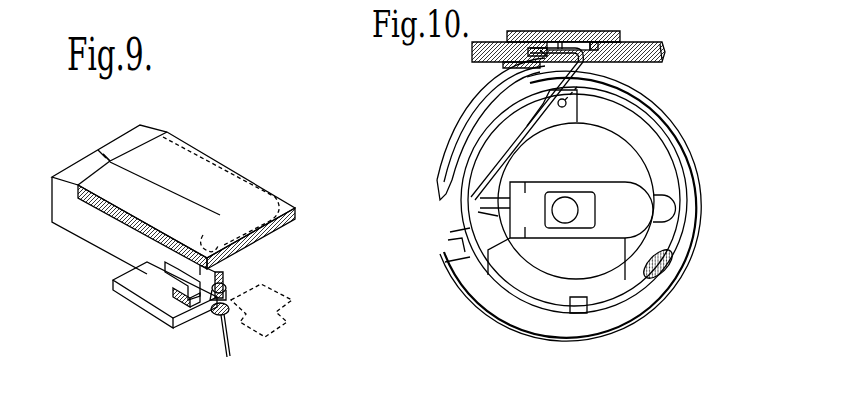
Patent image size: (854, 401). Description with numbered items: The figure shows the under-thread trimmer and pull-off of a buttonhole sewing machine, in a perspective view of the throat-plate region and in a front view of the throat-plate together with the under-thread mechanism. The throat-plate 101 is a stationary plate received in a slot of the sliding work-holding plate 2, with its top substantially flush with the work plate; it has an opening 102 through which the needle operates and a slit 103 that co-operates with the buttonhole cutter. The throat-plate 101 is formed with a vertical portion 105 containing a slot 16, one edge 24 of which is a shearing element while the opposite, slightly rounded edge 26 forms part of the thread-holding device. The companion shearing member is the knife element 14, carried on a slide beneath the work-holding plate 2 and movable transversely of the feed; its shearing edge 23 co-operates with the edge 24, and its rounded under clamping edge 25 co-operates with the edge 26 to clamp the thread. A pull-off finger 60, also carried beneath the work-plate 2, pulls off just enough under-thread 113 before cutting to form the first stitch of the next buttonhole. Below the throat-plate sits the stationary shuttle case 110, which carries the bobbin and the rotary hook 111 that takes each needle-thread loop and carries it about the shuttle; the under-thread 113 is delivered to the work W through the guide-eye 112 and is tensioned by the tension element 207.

In FIG. 10, the work-holding plate 2 is at (662, 45).
In FIG. 10, the work W is at (660, 44).
In FIG. 9, the knife element 14 is at (160, 296).
In FIG. 10, the knife element 14 is at (561, 44).
In FIG. 9, the slot 16 is at (123, 297).
In FIG. 10, the shearing edge 23 is at (535, 50).
In FIG. 9, the edge of slot 24 is at (233, 272).
In FIG. 10, the edge of slot 24 is at (544, 52).
In FIG. 10, the rounded under clamping edge 25 is at (500, 64).
In FIG. 9, the opposite edge of slot 26 is at (224, 286).
In FIG. 10, the opposite edge of slot 26 is at (478, 82).
In FIG. 9, the pull-off finger 60 is at (213, 313).
In FIG. 9, the throat-plate 101 is at (293, 227).
In FIG. 10, the throat-plate 101 is at (618, 42).
In FIG. 9, the opening 102 is at (273, 196).
In FIG. 10, the opening 102 is at (594, 40).
In FIG. 9, the slit 103 is at (112, 157).
In FIG. 9, the vertical portion 105 is at (100, 242).
In FIG. 10, the vertical portion 105 is at (493, 42).
In FIG. 10, the shuttle case 110 is at (610, 160).
In FIG. 10, the rotary hook 111 is at (440, 183).
In FIG. 10, the guide-eye 112 is at (568, 107).
In FIG. 10, the under-thread 113 is at (590, 60).
In FIG. 10, the tension element 207 is at (467, 231).